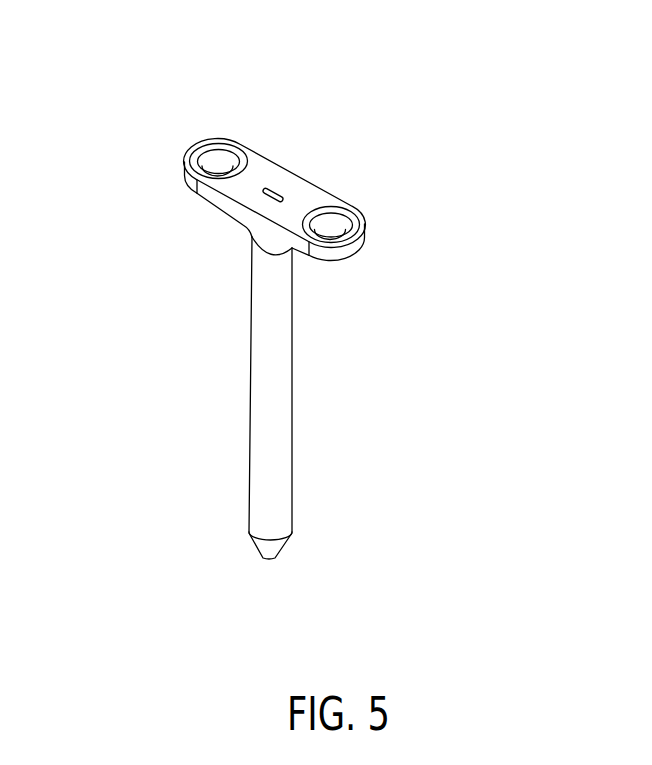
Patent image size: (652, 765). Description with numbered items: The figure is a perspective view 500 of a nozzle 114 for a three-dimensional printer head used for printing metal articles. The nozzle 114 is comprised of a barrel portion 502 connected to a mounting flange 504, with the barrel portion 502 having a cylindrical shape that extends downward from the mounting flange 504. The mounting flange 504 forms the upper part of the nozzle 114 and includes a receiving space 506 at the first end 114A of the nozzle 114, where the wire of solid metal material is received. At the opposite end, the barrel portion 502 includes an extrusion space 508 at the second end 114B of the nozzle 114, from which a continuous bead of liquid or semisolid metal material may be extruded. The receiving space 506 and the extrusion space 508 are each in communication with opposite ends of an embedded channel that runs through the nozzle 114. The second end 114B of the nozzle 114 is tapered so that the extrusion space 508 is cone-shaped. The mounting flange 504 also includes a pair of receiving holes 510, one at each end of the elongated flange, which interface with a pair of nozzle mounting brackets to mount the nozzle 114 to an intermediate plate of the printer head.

The perspective view 500 is at (562, 120).
The nozzle 114 is at (123, 143).
The first end 114A is at (470, 155).
The second end 114B is at (247, 598).
The barrel portion 502 is at (296, 390).
The mounting flange 504 is at (355, 258).
The receiving space 506 is at (260, 198).
The extrusion space 508 is at (279, 561).
The receiving holes 510 is at (243, 160).